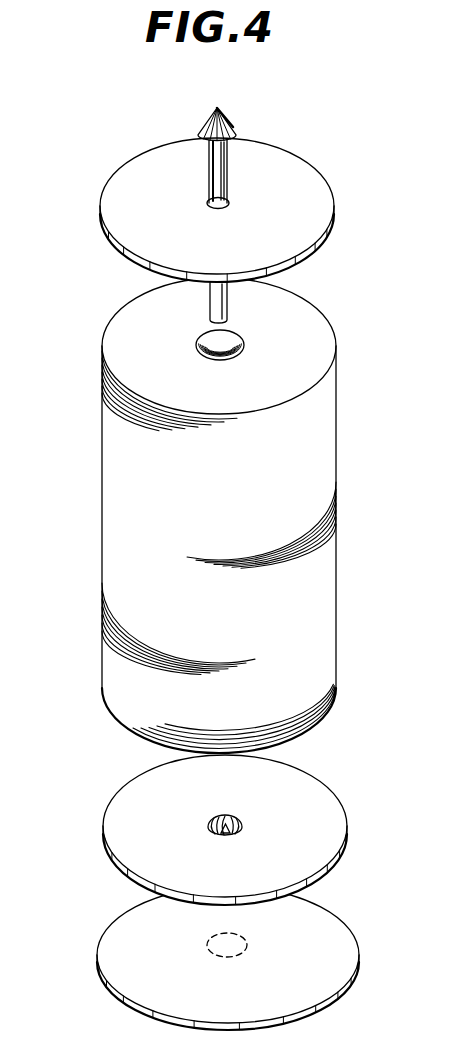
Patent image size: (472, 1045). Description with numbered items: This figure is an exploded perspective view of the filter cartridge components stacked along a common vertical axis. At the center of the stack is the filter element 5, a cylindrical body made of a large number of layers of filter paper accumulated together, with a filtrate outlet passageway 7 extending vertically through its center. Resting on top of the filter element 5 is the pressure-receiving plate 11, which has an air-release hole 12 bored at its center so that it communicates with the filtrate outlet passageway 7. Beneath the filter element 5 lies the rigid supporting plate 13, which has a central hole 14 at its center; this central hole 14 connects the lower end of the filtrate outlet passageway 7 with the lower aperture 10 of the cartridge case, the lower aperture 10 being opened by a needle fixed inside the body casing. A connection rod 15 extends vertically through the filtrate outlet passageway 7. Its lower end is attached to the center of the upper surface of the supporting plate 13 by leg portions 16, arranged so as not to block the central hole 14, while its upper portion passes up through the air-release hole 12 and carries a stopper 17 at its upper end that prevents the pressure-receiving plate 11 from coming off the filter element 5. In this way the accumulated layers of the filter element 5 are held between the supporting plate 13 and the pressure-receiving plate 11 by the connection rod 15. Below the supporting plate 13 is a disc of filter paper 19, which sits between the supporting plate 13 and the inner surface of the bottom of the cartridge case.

The filter element 5 is at (135, 505).
The filtrate outlet passageway 7 is at (203, 341).
The pressure-receiving plate 11 is at (280, 178).
The air-release hole 12 is at (207, 204).
The connection rod 15 is at (221, 163).
The stopper 17 is at (222, 123).
The supporting plate 13 is at (142, 797).
The leg portions 16 is at (208, 826).
The central hole 14 is at (216, 834).
The lower aperture 10 is at (205, 935).
The filter paper 19 is at (123, 955).